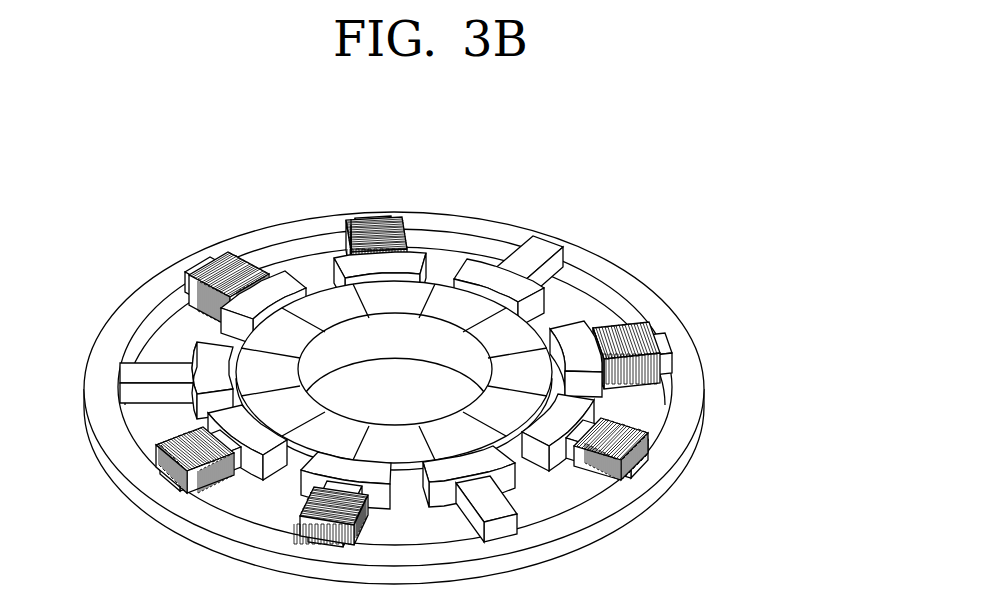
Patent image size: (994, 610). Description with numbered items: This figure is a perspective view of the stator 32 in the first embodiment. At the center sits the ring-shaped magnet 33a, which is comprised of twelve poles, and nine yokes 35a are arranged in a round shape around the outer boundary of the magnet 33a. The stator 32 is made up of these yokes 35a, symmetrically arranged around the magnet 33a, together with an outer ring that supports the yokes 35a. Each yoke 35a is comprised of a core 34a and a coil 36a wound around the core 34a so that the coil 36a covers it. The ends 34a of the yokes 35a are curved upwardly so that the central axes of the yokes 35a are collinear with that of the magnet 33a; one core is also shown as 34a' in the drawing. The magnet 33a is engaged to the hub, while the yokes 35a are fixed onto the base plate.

The stator 32 is at (582, 252).
The magnet 33a is at (318, 293).
The core 34a is at (685, 362).
The stator core without coil 34a' is at (508, 249).
The yoke 35a is at (762, 300).
The coil 36a is at (657, 343).